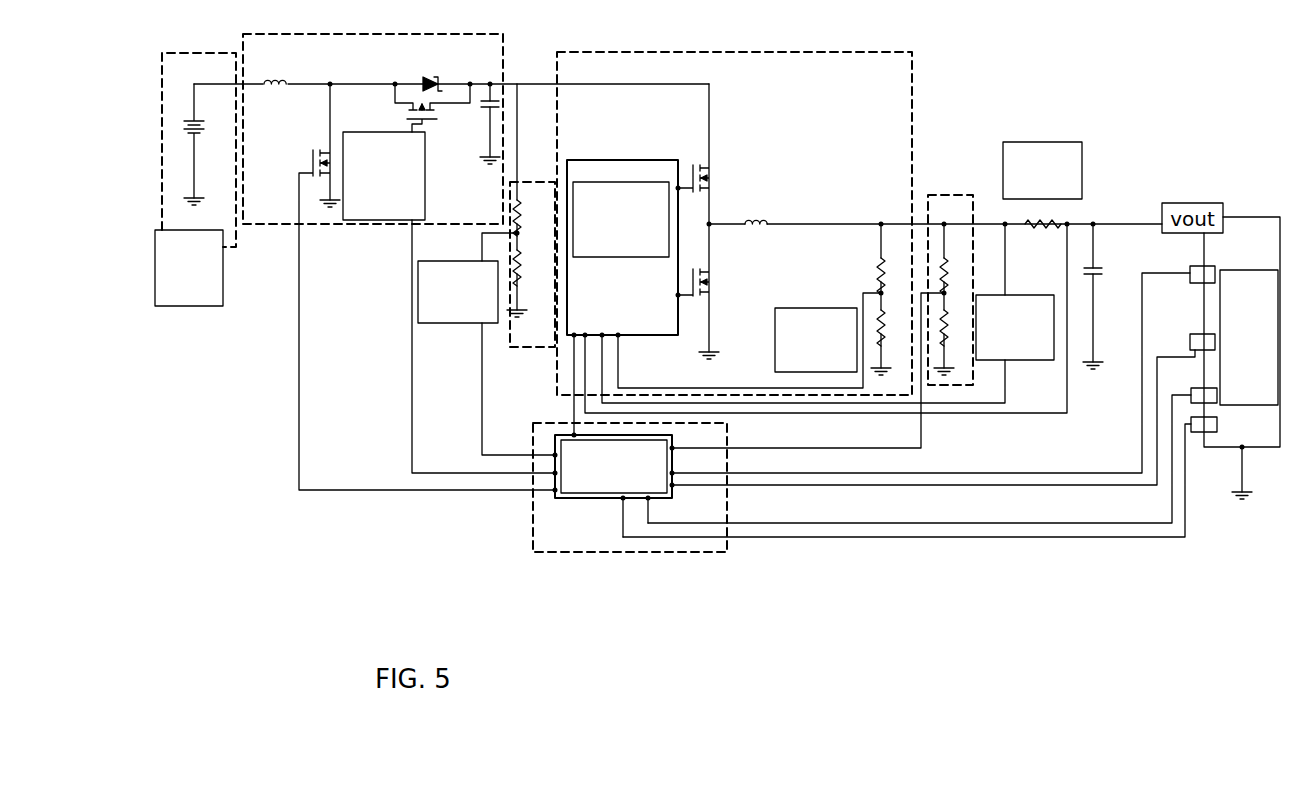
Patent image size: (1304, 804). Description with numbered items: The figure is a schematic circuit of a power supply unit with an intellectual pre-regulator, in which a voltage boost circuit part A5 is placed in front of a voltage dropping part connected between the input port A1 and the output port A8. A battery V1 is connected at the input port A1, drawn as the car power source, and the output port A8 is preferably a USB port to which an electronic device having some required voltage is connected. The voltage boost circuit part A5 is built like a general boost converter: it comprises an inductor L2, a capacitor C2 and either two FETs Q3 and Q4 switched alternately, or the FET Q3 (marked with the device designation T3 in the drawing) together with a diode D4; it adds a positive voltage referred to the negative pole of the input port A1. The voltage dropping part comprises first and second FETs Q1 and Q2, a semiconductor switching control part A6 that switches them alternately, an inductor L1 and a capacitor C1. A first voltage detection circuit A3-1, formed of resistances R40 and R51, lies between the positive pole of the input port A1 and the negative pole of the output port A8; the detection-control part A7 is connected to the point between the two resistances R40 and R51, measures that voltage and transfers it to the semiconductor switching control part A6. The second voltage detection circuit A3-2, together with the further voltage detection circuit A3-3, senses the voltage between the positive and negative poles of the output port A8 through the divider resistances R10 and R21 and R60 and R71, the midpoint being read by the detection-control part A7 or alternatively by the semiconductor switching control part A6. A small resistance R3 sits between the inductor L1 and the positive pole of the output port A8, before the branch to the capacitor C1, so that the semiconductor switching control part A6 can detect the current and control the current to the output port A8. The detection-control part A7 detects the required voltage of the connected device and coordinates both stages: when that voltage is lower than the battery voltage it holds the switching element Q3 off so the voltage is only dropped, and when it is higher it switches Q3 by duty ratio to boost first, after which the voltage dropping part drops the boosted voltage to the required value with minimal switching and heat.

The input port A1 is at (195, 179).
The battery 12V V1 is at (208, 144).
The voltage boost circuit part A5 is at (399, 253).
The inductor L2 is at (277, 65).
The FET Q3 is at (405, 287).
The transistor 2N6755 T3 is at (297, 126).
The diode D4 is at (440, 65).
The FET Q4 is at (432, 134).
The boost output capacitor 47u C2 is at (484, 124).
The semiconductor switching control part A6 is at (812, 243).
The FET Q1 is at (722, 154).
The FET Q2 is at (722, 291).
The inductor L1 is at (935, 205).
The resistance R40 is at (532, 215).
The resistance R51 is at (523, 283).
The first voltage detection circuit A3-1 is at (486, 344).
The resistance R10 is at (890, 266).
The resistance R21 is at (887, 342).
The voltage detection A3-3 is at (816, 340).
The voltage divider resistor R60 is at (950, 290).
The voltage divider resistor R71 is at (819, 370).
The second voltage detection circuit A3-2 is at (1015, 327).
The resistance R3 is at (1043, 218).
The output capacitor 47u C1 is at (1102, 296).
The output port A8 is at (950, 401).
The detection-control part A7 is at (630, 487).